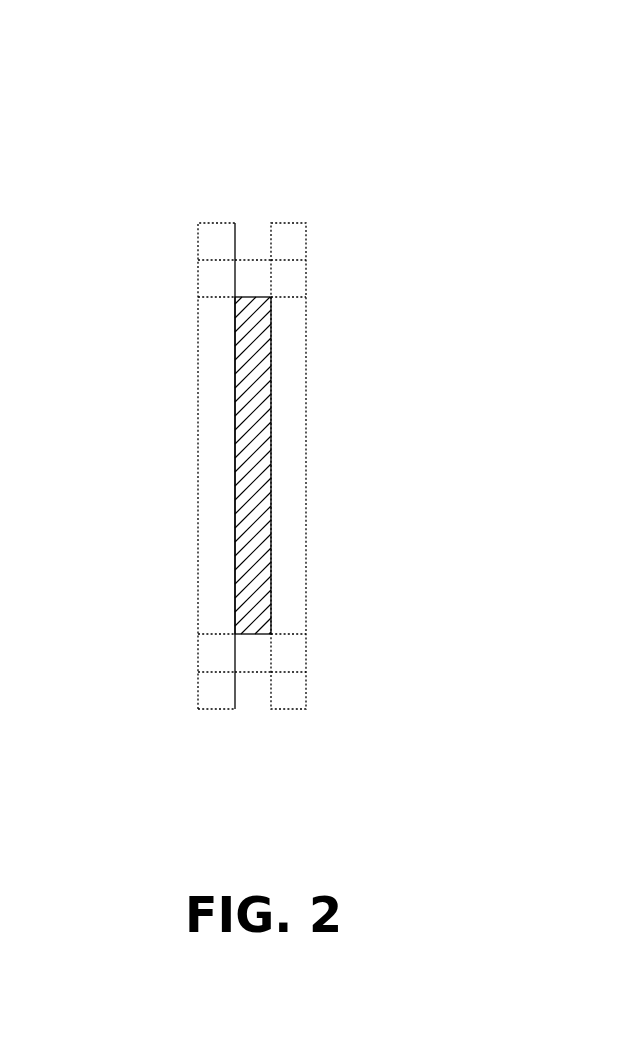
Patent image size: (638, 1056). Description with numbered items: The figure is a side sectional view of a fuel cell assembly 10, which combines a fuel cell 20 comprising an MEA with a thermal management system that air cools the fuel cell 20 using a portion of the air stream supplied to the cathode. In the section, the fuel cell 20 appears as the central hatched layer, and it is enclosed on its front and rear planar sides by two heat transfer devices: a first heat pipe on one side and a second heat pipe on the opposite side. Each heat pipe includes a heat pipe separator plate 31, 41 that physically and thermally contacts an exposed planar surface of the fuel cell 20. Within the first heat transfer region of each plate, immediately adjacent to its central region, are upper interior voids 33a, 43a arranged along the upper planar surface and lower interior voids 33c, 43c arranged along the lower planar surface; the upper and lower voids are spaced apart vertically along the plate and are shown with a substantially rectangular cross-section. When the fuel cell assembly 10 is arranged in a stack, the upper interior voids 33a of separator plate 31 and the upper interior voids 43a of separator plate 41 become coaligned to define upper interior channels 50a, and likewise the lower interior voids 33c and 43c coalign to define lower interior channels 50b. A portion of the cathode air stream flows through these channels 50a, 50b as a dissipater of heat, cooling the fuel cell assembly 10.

The fuel cell assembly 10 is at (112, 96).
The fuel cell 20 is at (255, 507).
The heat pipe separator plate 31 is at (217, 687).
The upper interior voids 33a is at (198, 282).
The lower interior voids 33c is at (198, 657).
The heat pipe separator plate 41 is at (288, 694).
The upper interior voids 43a is at (307, 282).
The lower interior voids 43c is at (307, 657).
The upper interior channels 50a is at (252, 260).
The lower interior channels 50b is at (255, 657).